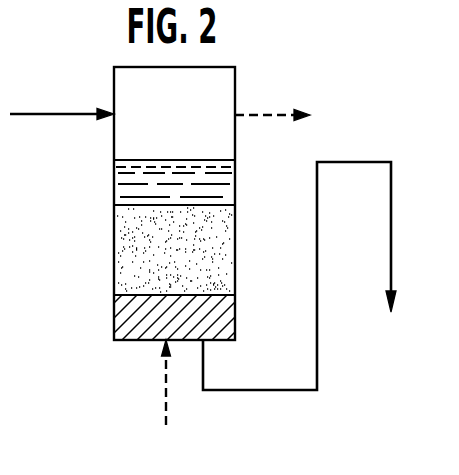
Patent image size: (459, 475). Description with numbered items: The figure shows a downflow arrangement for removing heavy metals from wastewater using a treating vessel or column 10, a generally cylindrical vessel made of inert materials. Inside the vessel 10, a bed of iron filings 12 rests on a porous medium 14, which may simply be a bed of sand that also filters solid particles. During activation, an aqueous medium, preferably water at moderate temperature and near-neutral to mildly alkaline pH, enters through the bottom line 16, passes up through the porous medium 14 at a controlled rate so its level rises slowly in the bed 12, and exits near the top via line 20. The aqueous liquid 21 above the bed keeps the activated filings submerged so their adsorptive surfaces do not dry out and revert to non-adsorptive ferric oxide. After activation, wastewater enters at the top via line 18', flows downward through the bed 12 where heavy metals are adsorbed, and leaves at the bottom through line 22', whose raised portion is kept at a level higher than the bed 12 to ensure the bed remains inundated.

The treating vessel or column 10 is at (112, 136).
The bed of iron filings 12 is at (135, 229).
The porous medium 14 is at (120, 316).
The line 16 is at (162, 385).
The line 18' is at (62, 101).
The line 20 is at (266, 113).
The aqueous liquid 21 is at (112, 178).
The line 22' is at (260, 346).